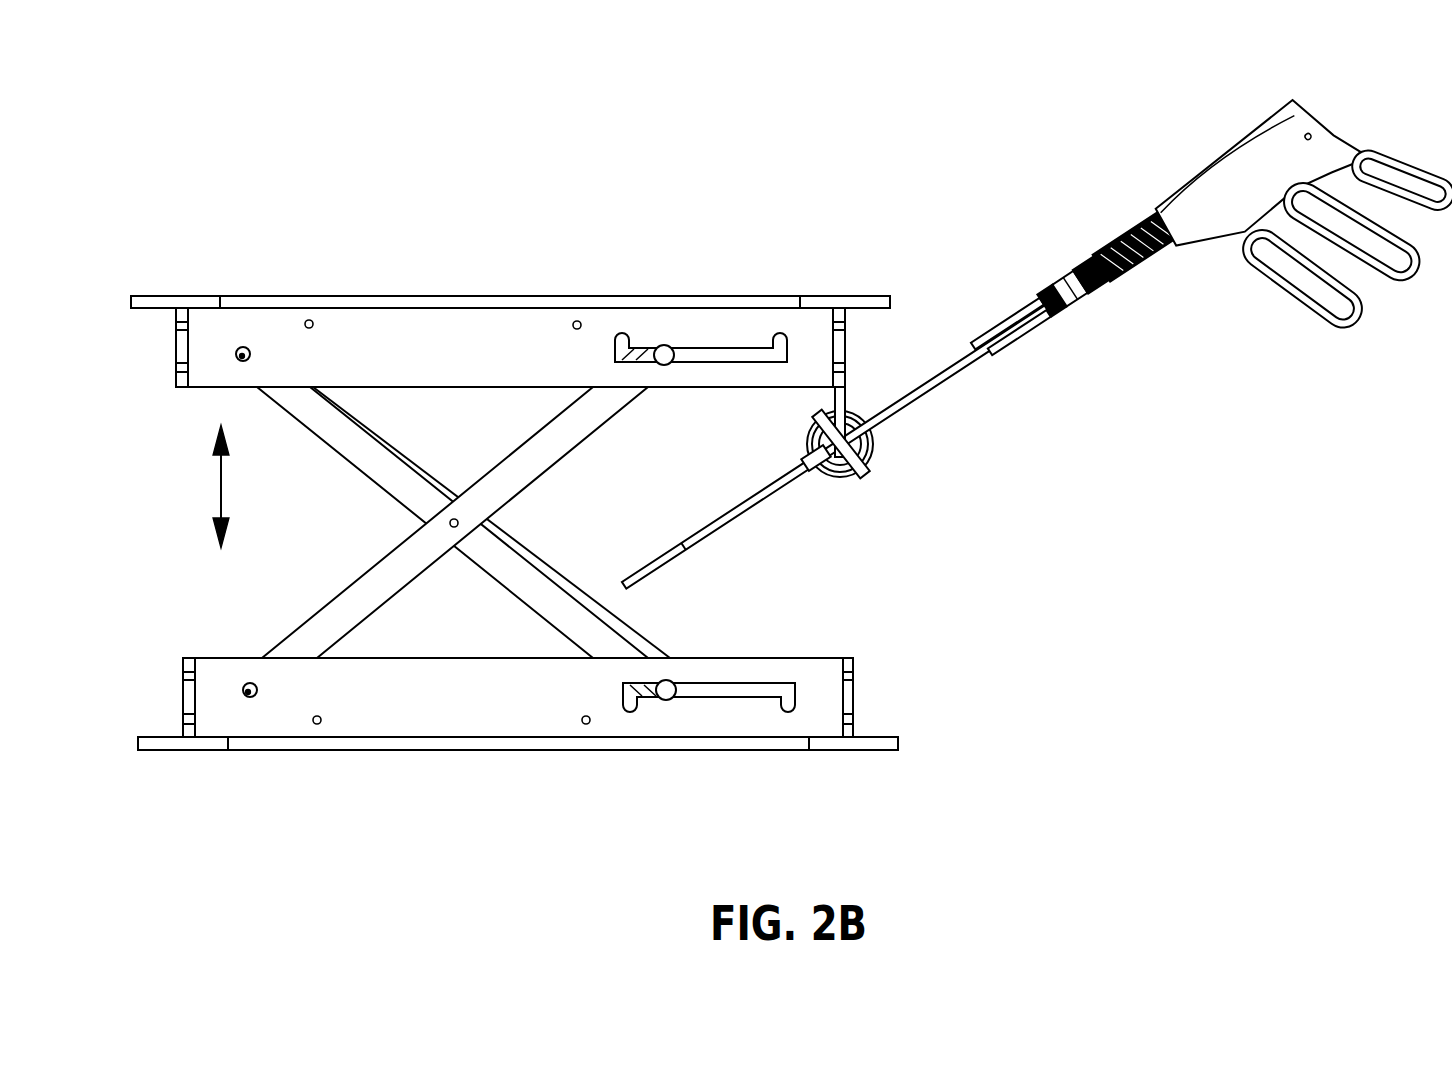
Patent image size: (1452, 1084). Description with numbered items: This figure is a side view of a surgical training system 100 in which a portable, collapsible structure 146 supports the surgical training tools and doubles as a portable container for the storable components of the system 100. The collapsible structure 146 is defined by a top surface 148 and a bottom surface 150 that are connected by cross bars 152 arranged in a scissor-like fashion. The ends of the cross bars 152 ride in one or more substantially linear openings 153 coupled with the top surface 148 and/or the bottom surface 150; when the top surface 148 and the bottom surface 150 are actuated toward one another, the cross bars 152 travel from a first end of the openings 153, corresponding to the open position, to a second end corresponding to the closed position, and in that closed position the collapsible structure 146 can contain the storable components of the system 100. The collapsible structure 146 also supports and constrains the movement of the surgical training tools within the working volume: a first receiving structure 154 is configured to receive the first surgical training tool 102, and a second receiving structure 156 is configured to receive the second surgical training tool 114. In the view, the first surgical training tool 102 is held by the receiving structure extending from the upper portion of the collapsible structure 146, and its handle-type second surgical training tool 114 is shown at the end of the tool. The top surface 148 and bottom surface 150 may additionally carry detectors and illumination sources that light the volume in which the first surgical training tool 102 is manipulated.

The surgical training system 100 is at (767, 425).
The first surgical training tool 102 is at (1027, 388).
The second surgical training tool 114 is at (1298, 214).
The collapsible structure 146 is at (532, 504).
The top surface 148 is at (505, 296).
The bottom surface 150 is at (273, 748).
The cross bars 152 is at (342, 457).
The substantially linear openings 153 is at (735, 348).
The first receiving structure 154 is at (855, 430).
The second receiving structure 156 is at (840, 470).